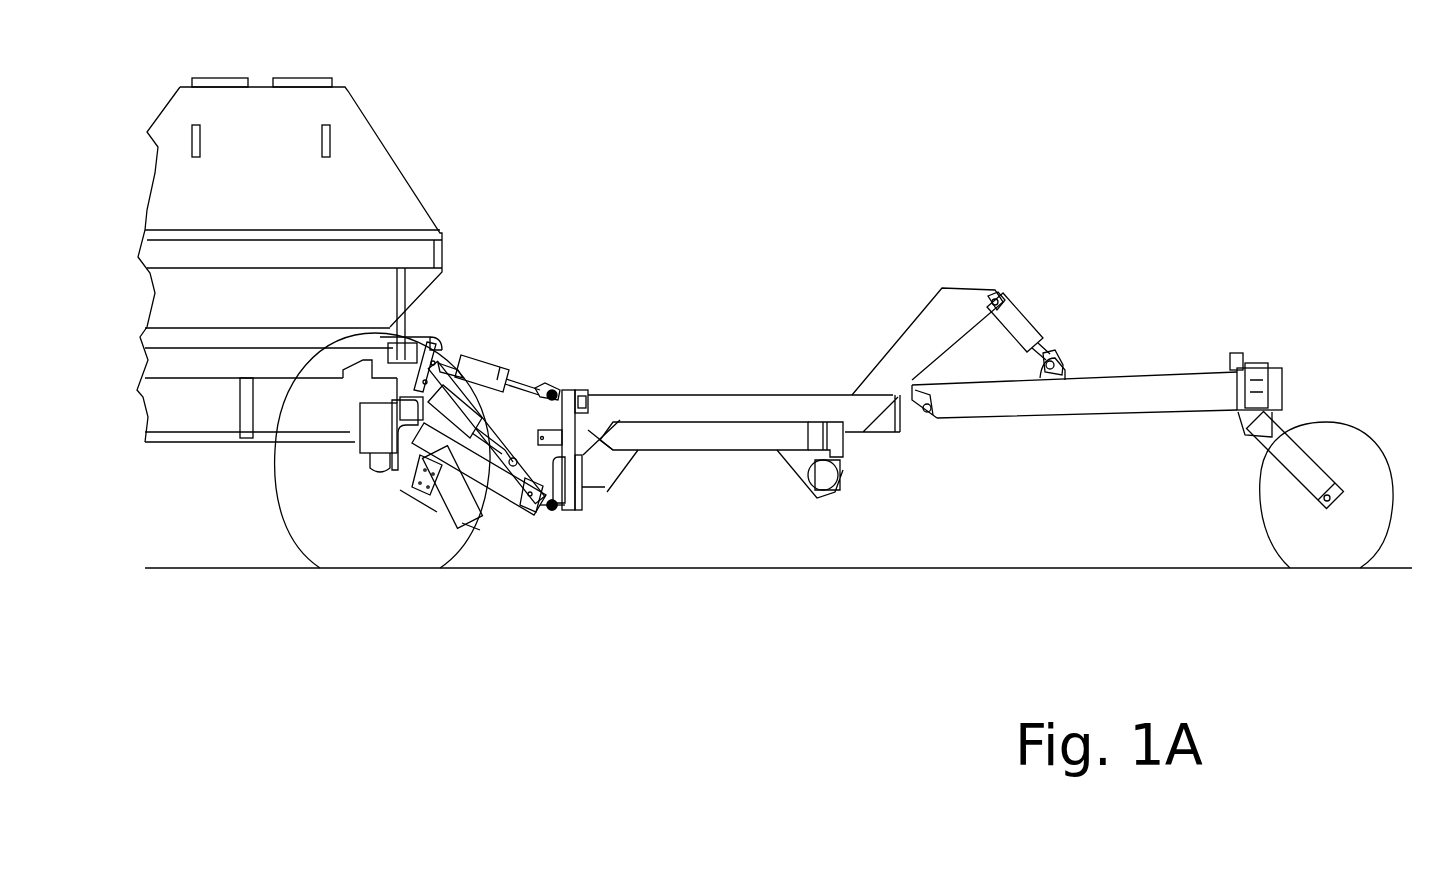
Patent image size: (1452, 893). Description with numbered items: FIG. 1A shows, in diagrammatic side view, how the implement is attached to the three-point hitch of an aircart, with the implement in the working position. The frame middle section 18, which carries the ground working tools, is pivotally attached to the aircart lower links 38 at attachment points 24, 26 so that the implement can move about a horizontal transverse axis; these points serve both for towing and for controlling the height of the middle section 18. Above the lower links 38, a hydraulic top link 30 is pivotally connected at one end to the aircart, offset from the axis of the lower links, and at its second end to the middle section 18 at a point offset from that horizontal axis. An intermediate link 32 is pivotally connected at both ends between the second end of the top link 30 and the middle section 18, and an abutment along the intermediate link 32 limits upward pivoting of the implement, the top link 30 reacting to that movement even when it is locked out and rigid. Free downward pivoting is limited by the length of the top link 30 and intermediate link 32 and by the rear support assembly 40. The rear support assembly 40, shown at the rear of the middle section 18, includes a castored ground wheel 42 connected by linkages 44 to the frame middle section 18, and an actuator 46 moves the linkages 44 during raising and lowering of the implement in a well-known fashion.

The frame middle section 18 is at (712, 322).
The attachment point 24 is at (550, 507).
The attachment point 26 is at (552, 505).
The hydraulic top link 30 is at (466, 378).
The intermediate link 32 is at (540, 386).
The lower links 38 is at (503, 487).
The rear support assembly 40 is at (1110, 350).
The castored ground wheel 42 is at (1342, 437).
The linkages 44 is at (1180, 390).
The actuator 46 is at (1020, 317).